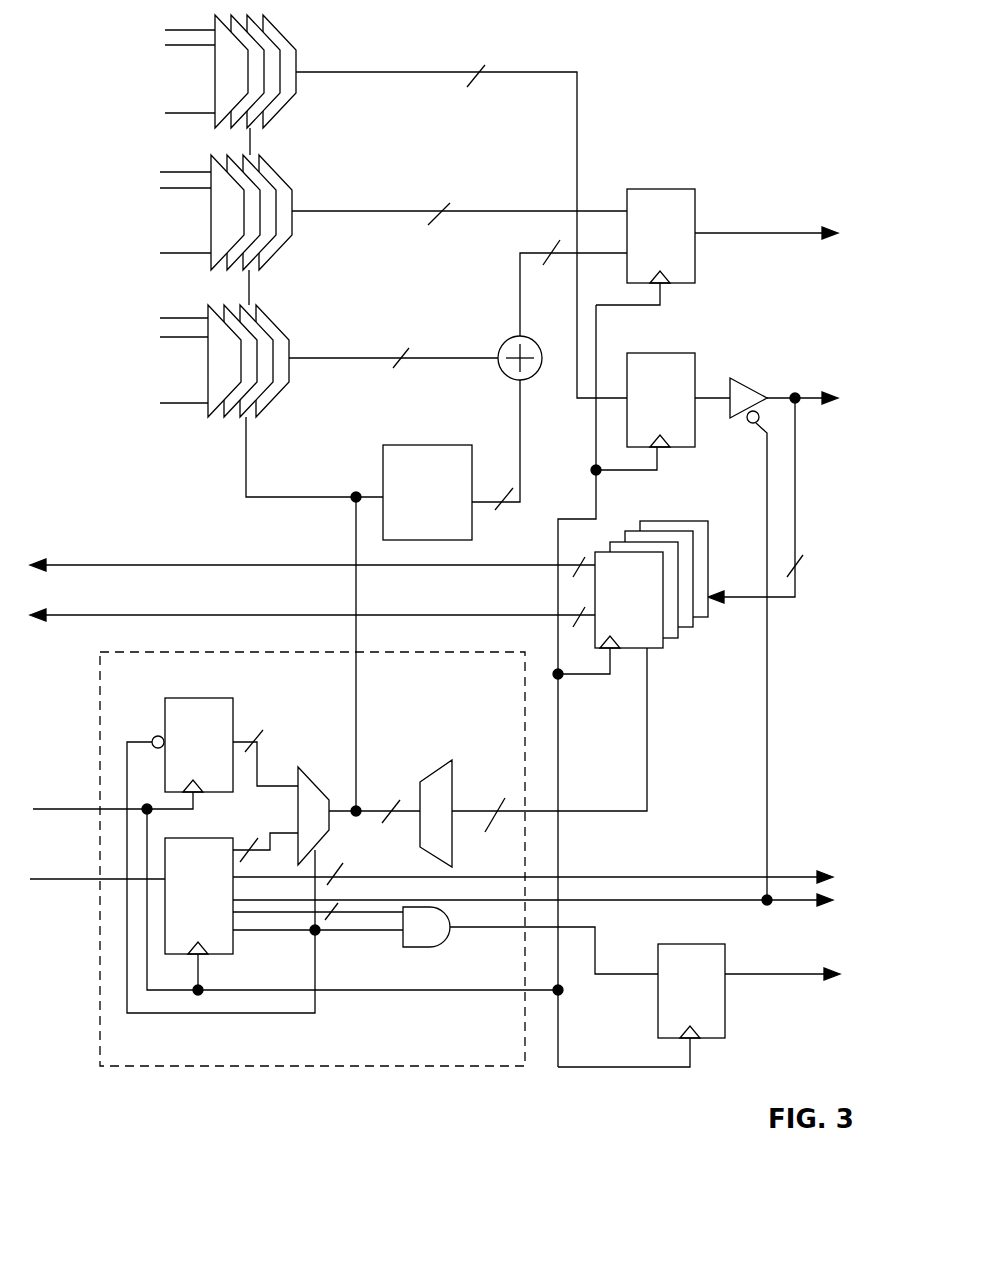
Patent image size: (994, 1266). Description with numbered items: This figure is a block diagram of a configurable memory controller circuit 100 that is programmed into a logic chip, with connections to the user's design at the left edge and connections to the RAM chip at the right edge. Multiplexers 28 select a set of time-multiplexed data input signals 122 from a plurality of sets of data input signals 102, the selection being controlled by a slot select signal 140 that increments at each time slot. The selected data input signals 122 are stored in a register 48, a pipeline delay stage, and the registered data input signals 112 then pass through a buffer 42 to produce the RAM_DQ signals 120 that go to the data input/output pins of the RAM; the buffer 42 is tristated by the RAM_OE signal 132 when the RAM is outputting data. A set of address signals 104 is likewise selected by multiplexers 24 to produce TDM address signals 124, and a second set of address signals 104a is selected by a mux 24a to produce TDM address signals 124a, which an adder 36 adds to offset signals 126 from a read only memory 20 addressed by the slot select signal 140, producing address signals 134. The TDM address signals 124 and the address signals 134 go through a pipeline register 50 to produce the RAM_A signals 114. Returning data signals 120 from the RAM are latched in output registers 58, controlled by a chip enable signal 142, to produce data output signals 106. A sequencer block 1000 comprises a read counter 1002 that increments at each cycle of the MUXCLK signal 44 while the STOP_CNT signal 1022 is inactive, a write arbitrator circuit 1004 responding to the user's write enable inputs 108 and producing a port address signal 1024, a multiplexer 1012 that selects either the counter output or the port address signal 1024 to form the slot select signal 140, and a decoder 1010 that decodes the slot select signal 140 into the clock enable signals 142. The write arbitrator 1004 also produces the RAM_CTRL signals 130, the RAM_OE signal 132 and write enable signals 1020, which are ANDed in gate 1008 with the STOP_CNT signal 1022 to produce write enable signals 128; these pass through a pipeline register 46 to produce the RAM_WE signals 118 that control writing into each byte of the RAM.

The memory controller circuit 100 is at (800, 84).
The multiplexers 28 is at (282, 113).
The data input signals 102 is at (190, 115).
The multiplexers 24 is at (280, 255).
The address signals 104 is at (190, 255).
The mux 24a is at (278, 402).
The second set of address signals 104a is at (188, 403).
The slot select signal 140 is at (247, 500).
The TDM data input signals 122 is at (430, 75).
The TDM address signals 124 is at (412, 215).
The TDM address signals 124a is at (368, 362).
The adder 36 is at (516, 337).
The address signals 134 is at (522, 253).
The offset signals 126 is at (515, 395).
The read only memory (ROM) 20 is at (445, 445).
The pipeline register 50 is at (700, 283).
The RAM_A signals 114 is at (803, 238).
The register 48 is at (700, 447).
The data input signals 112 is at (718, 393).
The buffer 42 is at (733, 377).
The RAM_DQ signals 120 is at (795, 603).
The registers 58 is at (707, 520).
The chip enable signal 142 is at (647, 700).
The data output signals 106 is at (77, 567).
The multiplexer 1012 is at (330, 788).
The sequencer block 1000 is at (95, 1032).
The read counter 1002 is at (165, 696).
The MUXCLK signal 44 is at (63, 812).
The STOP_CNT signal 1022 is at (303, 1015).
The write arbitrator circuit 1004 is at (233, 952).
The write enable inputs 108 is at (60, 885).
The port address signal 1024 is at (290, 832).
The decoder 1010 is at (420, 782).
The RAM_CTRL[0:3] signals 130 is at (783, 873).
The RAM_OE signal 132 is at (783, 902).
The write enable signals 1020 is at (367, 917).
The AND gate 1008 is at (437, 947).
The write enable signals 128 is at (598, 955).
The pipeline register 46 is at (725, 1040).
The RAM_WE signals 118 is at (800, 972).